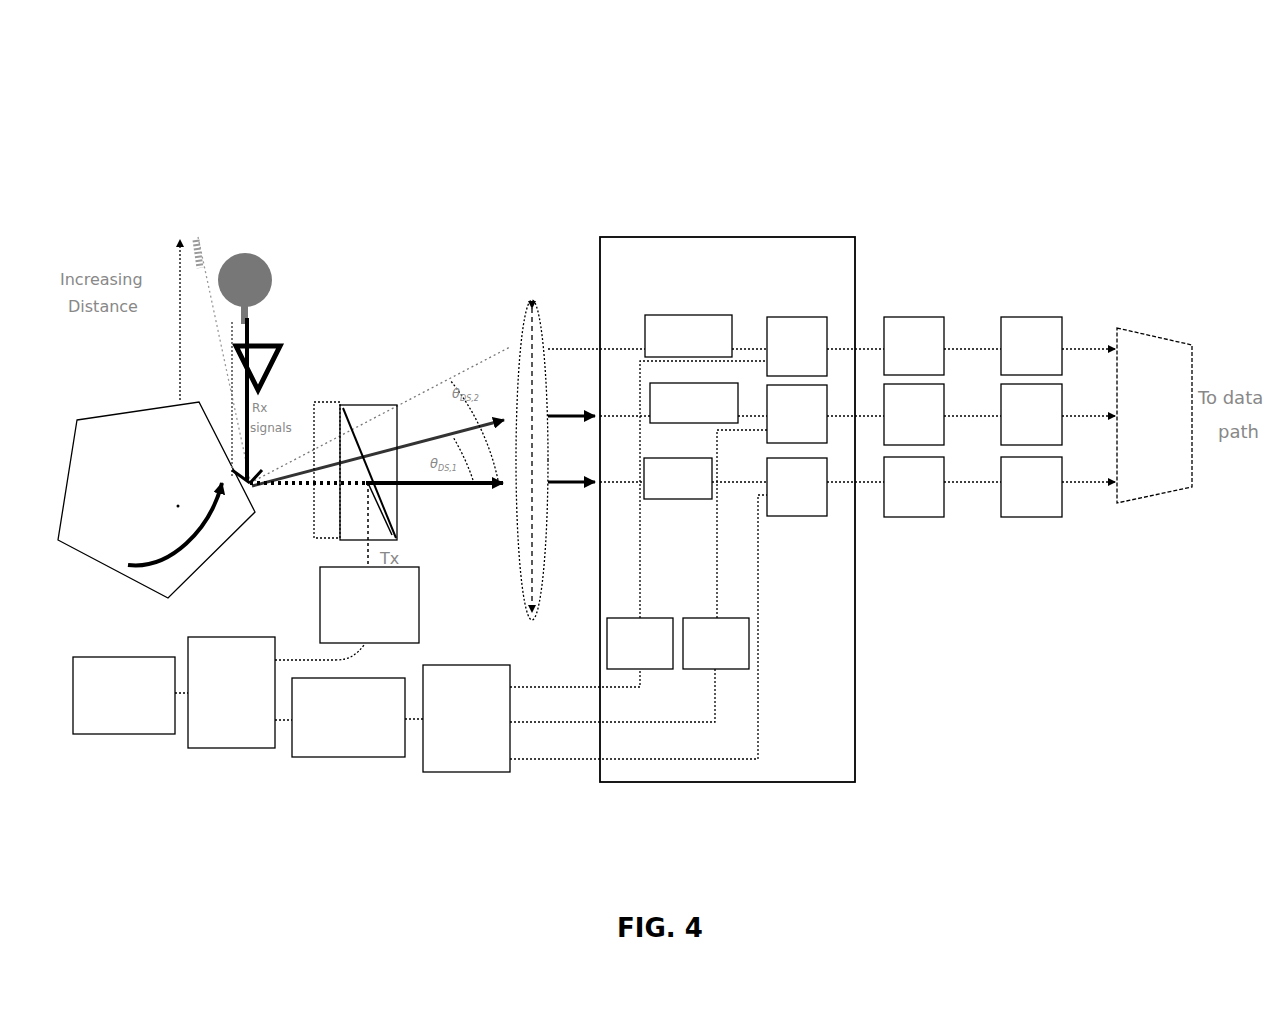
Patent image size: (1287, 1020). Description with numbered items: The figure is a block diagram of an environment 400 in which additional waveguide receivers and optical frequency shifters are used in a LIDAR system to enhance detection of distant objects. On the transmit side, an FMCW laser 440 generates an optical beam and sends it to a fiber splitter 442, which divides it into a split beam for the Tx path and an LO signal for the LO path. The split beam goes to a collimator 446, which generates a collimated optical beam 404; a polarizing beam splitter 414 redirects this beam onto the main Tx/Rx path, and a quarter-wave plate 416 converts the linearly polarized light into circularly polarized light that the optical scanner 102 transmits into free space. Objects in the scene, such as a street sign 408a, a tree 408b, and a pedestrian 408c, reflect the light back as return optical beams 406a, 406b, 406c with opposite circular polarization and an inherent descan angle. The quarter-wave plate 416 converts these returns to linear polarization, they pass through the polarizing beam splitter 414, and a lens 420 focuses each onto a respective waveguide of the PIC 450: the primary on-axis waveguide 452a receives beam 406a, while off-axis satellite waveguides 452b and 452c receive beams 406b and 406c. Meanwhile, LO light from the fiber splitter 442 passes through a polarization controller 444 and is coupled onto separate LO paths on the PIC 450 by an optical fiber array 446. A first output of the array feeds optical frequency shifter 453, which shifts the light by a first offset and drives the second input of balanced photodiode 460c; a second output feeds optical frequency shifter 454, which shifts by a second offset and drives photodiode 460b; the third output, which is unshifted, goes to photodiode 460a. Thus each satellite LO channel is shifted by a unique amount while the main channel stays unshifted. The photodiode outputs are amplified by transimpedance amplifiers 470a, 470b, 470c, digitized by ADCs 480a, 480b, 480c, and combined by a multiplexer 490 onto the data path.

The environment 400 is at (163, 84).
The optical scanner 102 is at (156, 500).
The collimated optical beam 404 is at (180, 368).
The return optical beam 406a is at (322, 403).
The return optical beam 406b is at (236, 346).
The return optical beam 406c is at (226, 357).
The object 408a is at (272, 346).
The object 408b is at (258, 265).
The object 408c is at (200, 240).
The polarizing beam splitter 414 is at (396, 524).
The quarter-wave plate 416 is at (325, 402).
The lens 420 is at (533, 303).
The FMCW laser 440 is at (130, 695).
The fiber splitter 442 is at (276, 692).
The polarization controller 444 is at (357, 717).
The collimator / optical fiber array 446 is at (539, 669).
The PIC 450 is at (727, 509).
The waveguide 452a is at (705, 478).
The waveguide 452b is at (708, 403).
The waveguide 452c is at (706, 336).
The optical frequency shifter 453 is at (640, 643).
The optical frequency shifter 454 is at (716, 643).
The balanced photodiode 460a is at (825, 487).
The balanced photodiode 460b is at (825, 414).
The balanced photodiode 460c is at (825, 346).
The transimpedance amplifier 470a is at (942, 487).
The transimpedance amplifier 470b is at (942, 414).
The transimpedance amplifier 470c is at (942, 346).
The ADC 480a is at (1058, 487).
The ADC 480b is at (1058, 414).
The ADC 480c is at (1058, 346).
The multiplexer 490 is at (1154, 415).